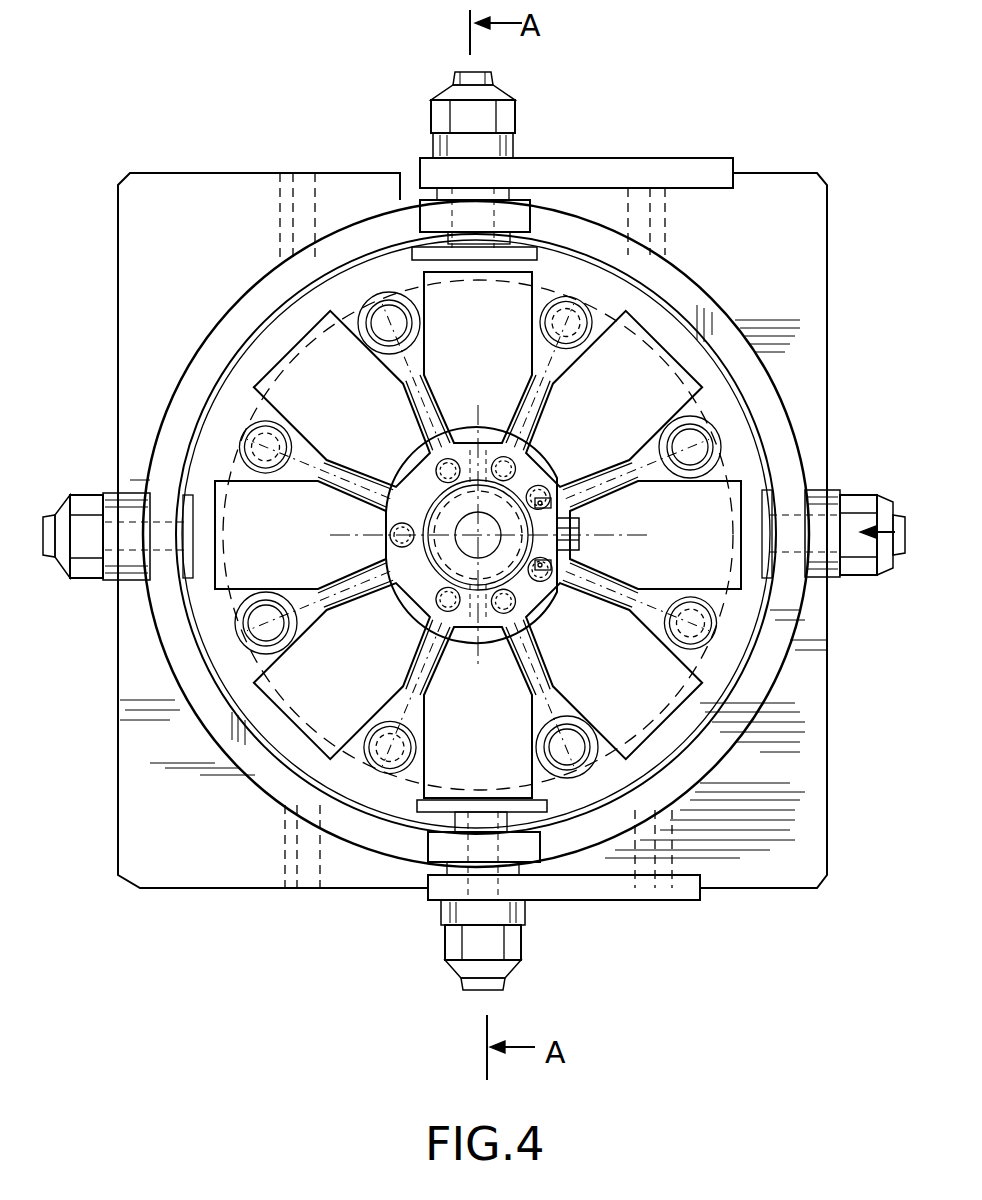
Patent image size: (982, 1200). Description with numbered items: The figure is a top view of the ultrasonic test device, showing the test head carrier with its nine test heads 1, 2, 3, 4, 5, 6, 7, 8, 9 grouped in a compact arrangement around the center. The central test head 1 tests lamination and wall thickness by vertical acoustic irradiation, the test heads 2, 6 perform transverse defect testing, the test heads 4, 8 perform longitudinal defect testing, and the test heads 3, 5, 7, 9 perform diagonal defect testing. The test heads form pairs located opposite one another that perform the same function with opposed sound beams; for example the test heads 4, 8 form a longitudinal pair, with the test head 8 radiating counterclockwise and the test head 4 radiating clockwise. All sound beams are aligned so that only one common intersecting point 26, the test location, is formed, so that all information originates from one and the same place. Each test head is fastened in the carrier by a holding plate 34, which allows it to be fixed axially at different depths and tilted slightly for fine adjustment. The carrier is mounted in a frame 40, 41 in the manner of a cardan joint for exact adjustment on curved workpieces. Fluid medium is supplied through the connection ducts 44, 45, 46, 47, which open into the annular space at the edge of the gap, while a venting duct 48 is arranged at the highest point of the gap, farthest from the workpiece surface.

The test head 1 is at (470, 568).
The test head 2 is at (713, 498).
The test head 3 is at (667, 385).
The test head 4 is at (495, 300).
The test head 5 is at (273, 388).
The test head 6 is at (232, 494).
The test head 7 is at (278, 681).
The test head 8 is at (512, 775).
The test head 9 is at (640, 726).
The intersecting point 26 is at (566, 510).
The holding plate 34 is at (615, 298).
The frame 40 is at (640, 168).
The frame 41 is at (760, 682).
The connection duct 44 is at (389, 300).
The connection duct 45 is at (262, 617).
The connection duct 46 is at (572, 760).
The connection duct 47 is at (690, 452).
The venting duct 48 is at (548, 480).